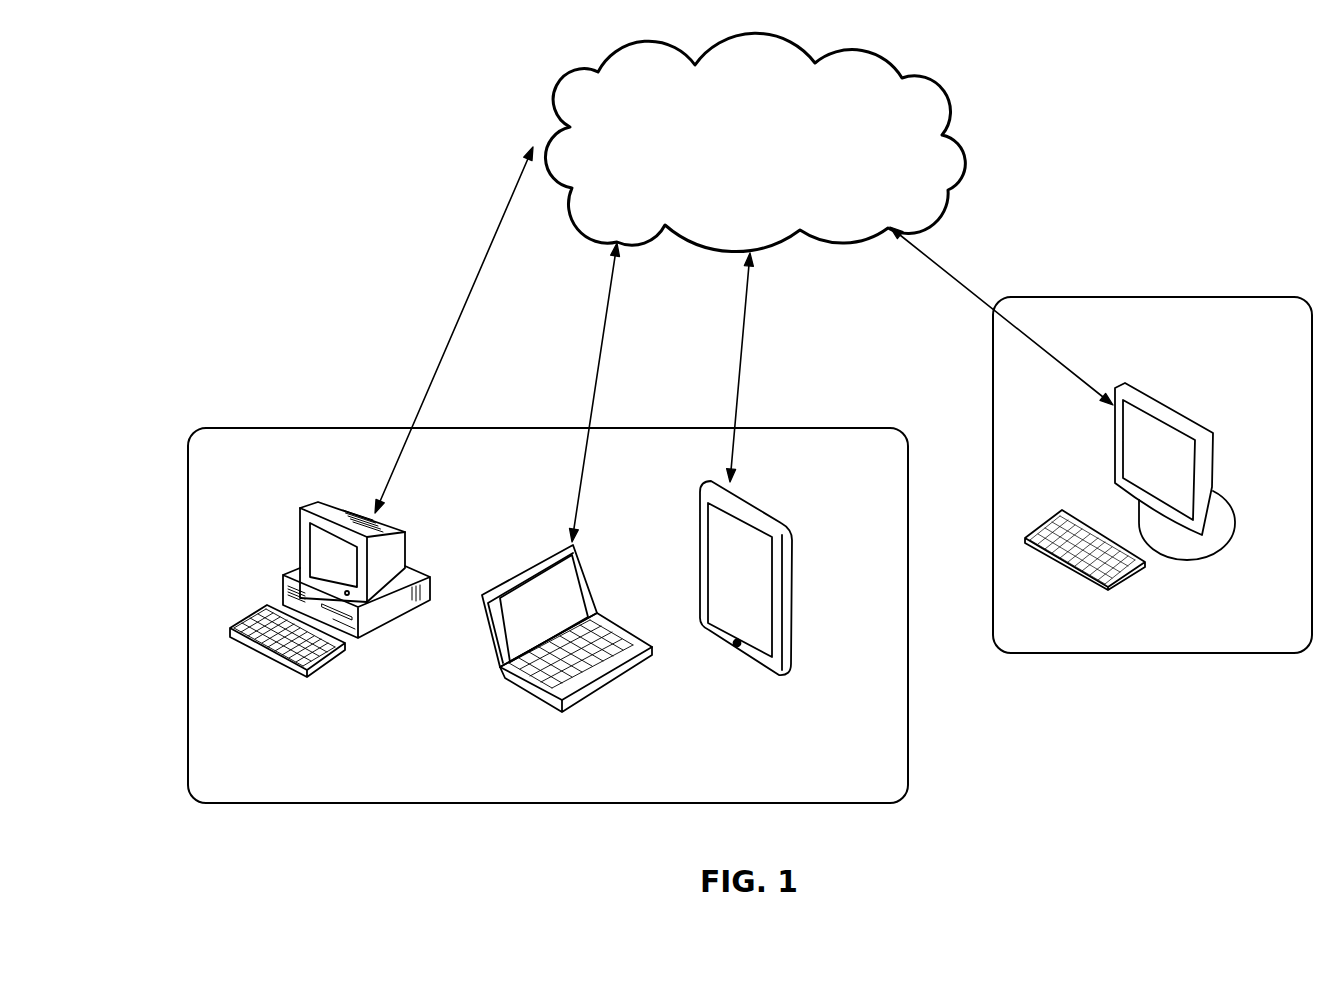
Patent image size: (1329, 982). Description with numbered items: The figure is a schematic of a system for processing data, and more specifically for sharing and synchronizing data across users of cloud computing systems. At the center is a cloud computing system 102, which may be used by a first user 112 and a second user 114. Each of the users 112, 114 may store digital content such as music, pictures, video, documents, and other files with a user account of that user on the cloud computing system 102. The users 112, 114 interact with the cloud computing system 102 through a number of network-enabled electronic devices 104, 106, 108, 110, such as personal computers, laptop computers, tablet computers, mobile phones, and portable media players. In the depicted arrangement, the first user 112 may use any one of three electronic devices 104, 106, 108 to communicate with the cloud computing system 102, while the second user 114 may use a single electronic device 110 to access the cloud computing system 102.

The cloud computing system 102 is at (770, 138).
The electronic device 104 is at (340, 617).
The electronic device 106 is at (562, 661).
The electronic device 108 is at (789, 595).
The electronic device 110 is at (1146, 511).
The first user 112 is at (273, 464).
The second user 114 is at (1238, 330).